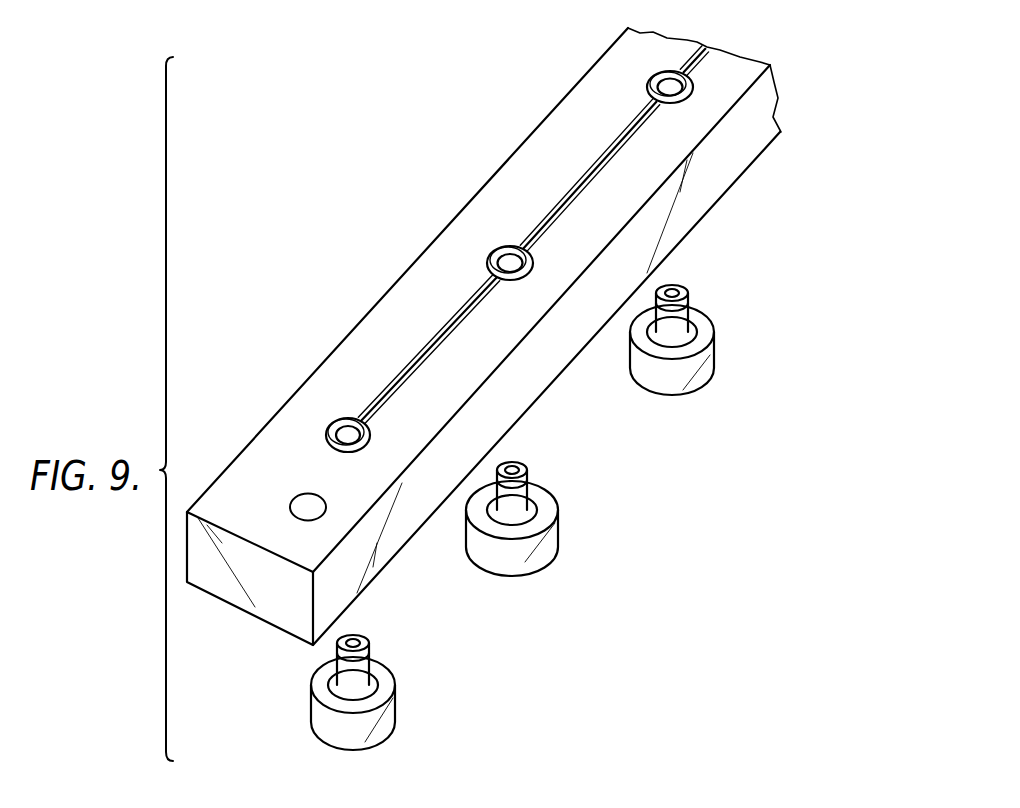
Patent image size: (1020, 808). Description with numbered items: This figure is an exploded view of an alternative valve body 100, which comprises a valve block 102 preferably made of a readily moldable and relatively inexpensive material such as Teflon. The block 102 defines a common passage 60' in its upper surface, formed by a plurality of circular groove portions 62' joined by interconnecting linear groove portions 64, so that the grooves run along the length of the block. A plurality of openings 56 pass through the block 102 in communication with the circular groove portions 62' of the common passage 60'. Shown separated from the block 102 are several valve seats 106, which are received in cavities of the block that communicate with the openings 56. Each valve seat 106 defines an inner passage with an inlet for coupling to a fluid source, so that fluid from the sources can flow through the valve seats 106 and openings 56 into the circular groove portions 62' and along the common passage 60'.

The valve body 100 is at (484, 336).
The valve block 102 is at (575, 88).
The openings 56 is at (510, 258).
The linear groove portions 64 is at (432, 335).
The circular groove portions 62' is at (321, 388).
The common passage 60' is at (643, 131).
The valve seats 106 is at (555, 527).